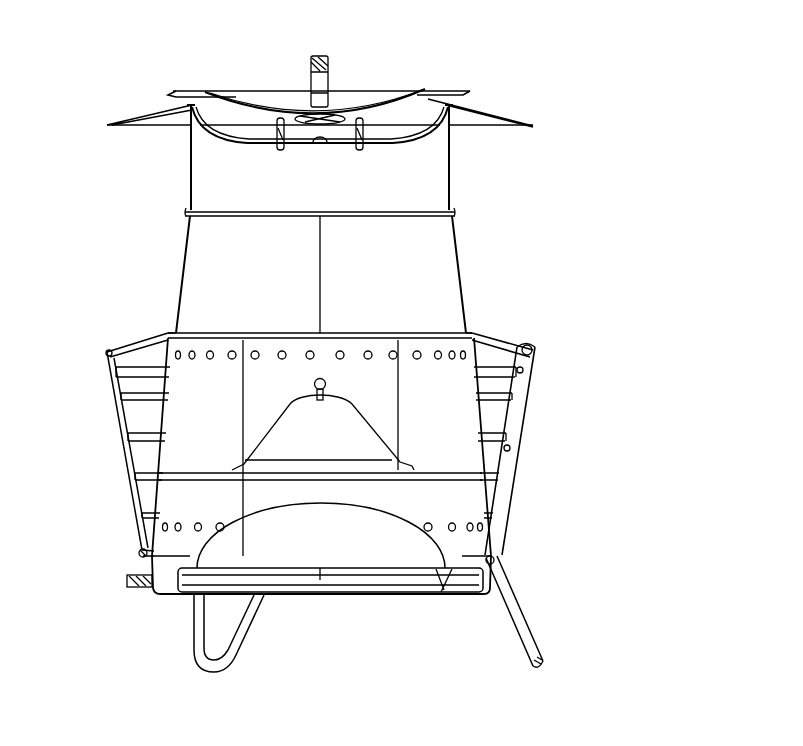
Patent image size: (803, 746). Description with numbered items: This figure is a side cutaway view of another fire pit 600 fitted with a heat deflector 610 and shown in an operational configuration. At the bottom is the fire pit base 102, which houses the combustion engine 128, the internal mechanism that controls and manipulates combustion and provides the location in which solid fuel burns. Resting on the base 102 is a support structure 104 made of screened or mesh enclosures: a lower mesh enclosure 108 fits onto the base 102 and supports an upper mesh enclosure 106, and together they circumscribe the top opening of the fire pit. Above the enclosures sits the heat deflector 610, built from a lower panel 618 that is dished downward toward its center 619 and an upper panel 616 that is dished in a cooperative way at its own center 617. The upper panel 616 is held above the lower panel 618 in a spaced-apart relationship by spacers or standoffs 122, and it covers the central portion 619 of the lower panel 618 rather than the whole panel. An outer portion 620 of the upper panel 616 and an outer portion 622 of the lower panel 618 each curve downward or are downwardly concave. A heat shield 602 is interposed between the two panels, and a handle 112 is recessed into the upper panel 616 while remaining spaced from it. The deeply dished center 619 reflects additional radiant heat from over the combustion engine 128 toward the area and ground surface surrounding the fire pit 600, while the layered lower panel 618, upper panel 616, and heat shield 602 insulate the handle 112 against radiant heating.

The fire pit 600 is at (650, 221).
The fire pit base 102 is at (525, 427).
The support structure 104 is at (466, 278).
The upper mesh enclosure 106 is at (342, 185).
The lower mesh enclosure 108 is at (274, 287).
The handle 112 is at (319, 56).
The spacers or standoffs 122 is at (278, 136).
The combustion engine 128 is at (152, 452).
The heat shield 602 is at (362, 98).
The heat deflector 610 is at (499, 109).
The upper panel 616 is at (447, 88).
The center of upper panel 617 is at (222, 130).
The lower panel 618 is at (127, 117).
The center of lower panel 619 is at (418, 132).
The outer portion of upper panel 620 is at (175, 92).
The outer portion of lower panel 622 is at (528, 122).